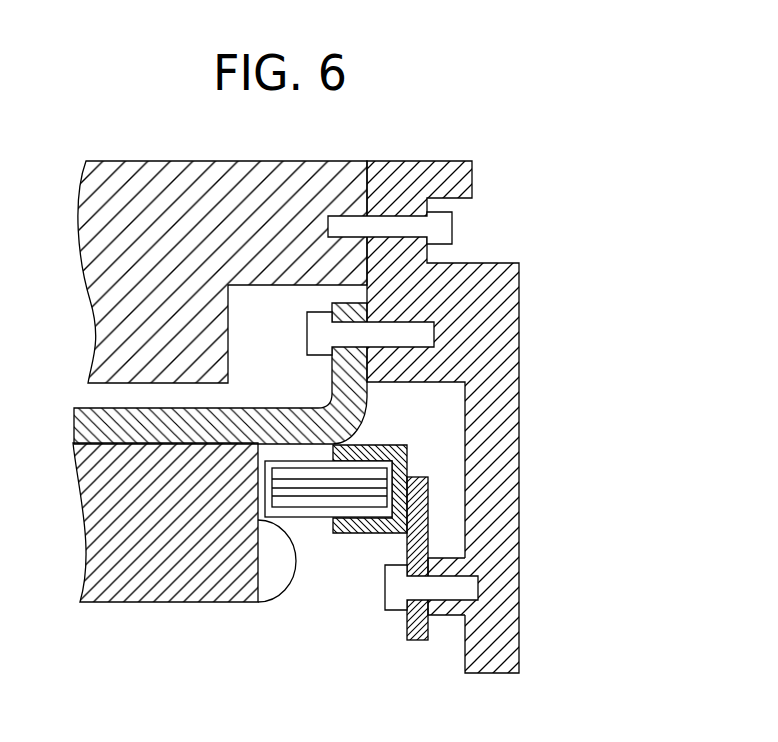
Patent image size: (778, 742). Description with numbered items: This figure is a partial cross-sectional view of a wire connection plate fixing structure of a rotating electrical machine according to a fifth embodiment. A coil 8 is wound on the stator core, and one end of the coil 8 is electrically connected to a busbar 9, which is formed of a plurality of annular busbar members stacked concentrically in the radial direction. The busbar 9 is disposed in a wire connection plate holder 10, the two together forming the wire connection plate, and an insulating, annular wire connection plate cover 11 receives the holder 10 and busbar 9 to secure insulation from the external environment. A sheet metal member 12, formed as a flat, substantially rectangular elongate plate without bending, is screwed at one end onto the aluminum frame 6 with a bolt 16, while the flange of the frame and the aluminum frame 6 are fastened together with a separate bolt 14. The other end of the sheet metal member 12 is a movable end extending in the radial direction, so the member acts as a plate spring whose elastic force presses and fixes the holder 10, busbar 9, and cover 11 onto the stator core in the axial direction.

The aluminum frame 6 is at (521, 302).
The coil 8 is at (300, 557).
The busbar 9 is at (407, 477).
The wire connection plate holder 10 is at (393, 448).
The wire connection plate cover 11 is at (428, 507).
The sheet metal member 12 is at (428, 547).
The bolt 14 is at (307, 332).
The bolt 16 is at (384, 598).